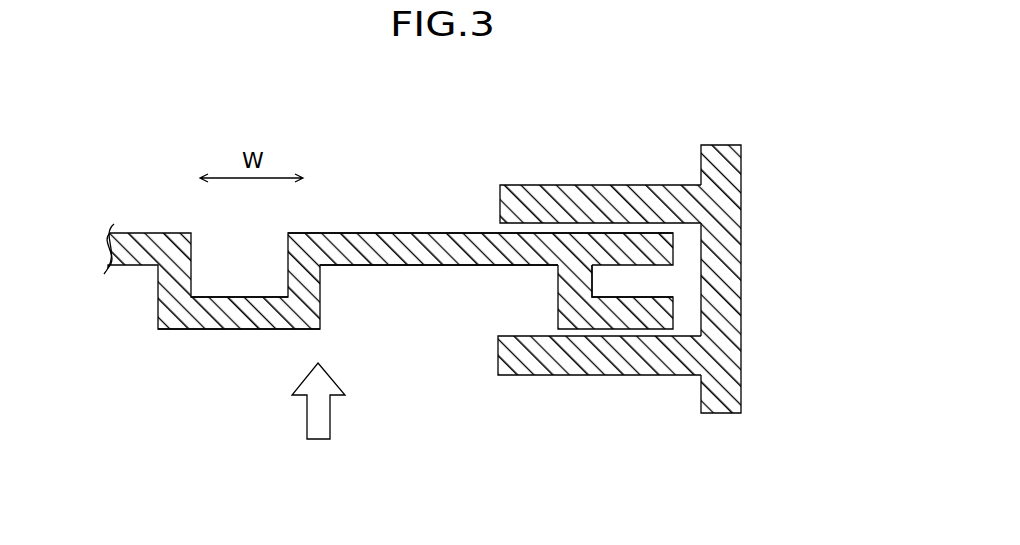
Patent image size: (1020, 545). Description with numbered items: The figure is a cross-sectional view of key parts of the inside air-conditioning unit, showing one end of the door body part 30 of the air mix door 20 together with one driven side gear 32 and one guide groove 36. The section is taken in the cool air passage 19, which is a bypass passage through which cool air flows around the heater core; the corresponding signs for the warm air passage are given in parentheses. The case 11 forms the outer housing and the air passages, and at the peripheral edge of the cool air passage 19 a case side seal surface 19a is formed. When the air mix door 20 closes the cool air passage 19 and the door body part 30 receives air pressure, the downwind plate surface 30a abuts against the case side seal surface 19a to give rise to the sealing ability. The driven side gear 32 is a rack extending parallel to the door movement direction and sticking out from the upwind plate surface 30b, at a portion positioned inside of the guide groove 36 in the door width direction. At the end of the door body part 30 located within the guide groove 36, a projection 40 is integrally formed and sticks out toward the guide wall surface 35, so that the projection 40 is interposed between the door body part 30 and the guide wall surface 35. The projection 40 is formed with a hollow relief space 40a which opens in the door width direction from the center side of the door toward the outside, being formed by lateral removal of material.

The case 11 is at (742, 238).
The cool air passage 19 is at (368, 208).
The case side seal surface 19a is at (603, 208).
The air mix door 20 is at (161, 188).
The door body part 30 is at (462, 235).
The plate surface 30a is at (415, 232).
The plate surface 30b is at (405, 267).
The driven side gear 32 is at (233, 305).
The guide wall surface 35 is at (550, 358).
The guide groove 36 is at (504, 307).
The projection 40 is at (615, 328).
The relief space 40a is at (633, 278).